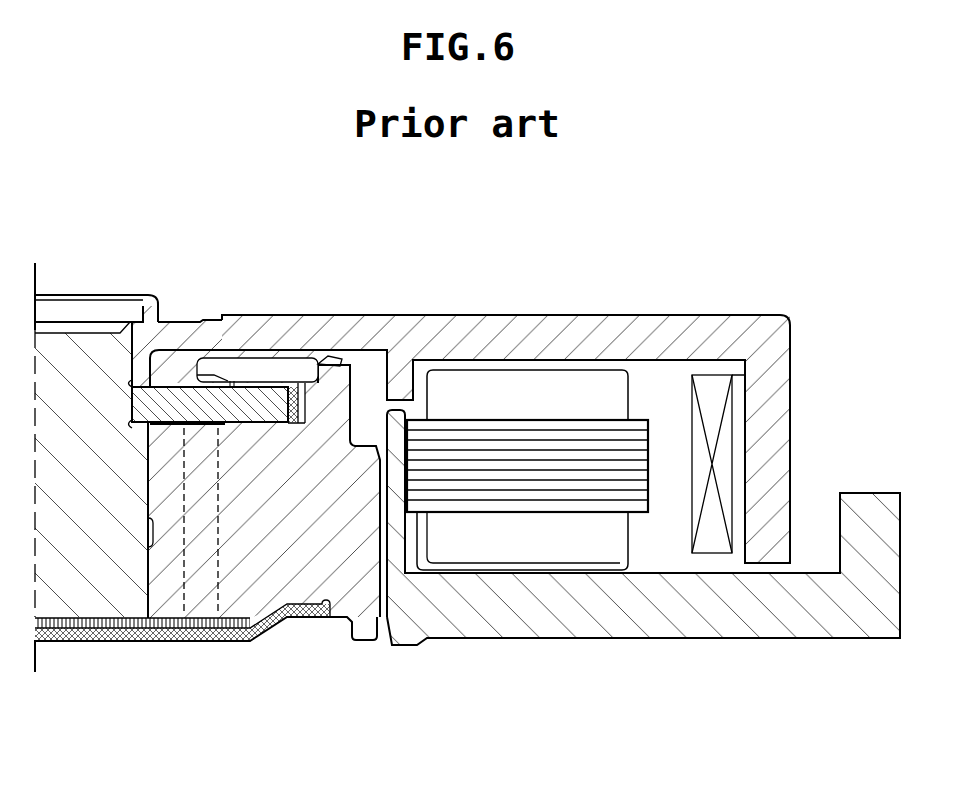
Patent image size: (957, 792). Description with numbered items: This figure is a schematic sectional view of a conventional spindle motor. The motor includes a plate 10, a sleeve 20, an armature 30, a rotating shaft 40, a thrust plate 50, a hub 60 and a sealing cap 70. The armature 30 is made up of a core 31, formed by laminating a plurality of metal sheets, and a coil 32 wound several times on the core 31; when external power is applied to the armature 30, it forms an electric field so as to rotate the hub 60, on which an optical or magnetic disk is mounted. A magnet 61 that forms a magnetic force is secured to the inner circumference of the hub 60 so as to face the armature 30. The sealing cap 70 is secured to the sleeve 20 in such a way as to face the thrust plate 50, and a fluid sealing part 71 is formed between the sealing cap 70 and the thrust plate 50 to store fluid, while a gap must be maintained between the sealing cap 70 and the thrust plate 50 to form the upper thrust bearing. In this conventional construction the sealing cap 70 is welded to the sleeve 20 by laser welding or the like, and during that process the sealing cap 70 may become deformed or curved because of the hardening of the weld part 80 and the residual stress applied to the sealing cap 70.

The plate 10 is at (718, 612).
The sleeve 20 is at (262, 565).
The armature 30 is at (527, 568).
The core 31 is at (520, 476).
The coil 32 is at (577, 542).
The rotating shaft 40 is at (88, 565).
The thrust plate 50 is at (173, 398).
The hub 60 is at (517, 342).
The magnet 61 is at (706, 389).
The sealing cap 70 is at (265, 370).
The fluid sealing part 71 is at (215, 377).
The weld part 80 is at (322, 353).